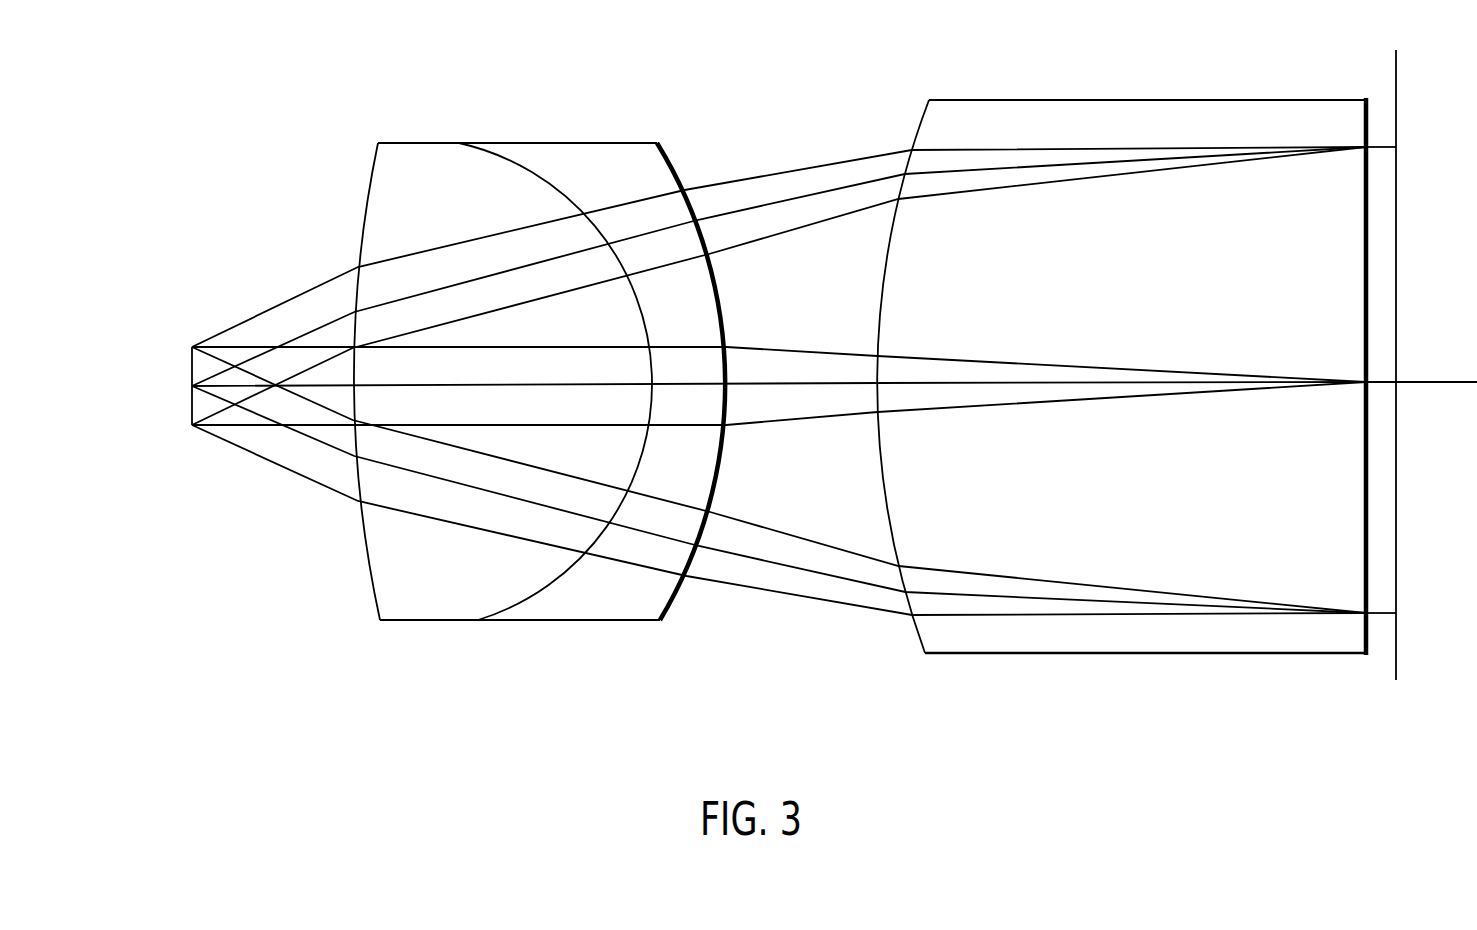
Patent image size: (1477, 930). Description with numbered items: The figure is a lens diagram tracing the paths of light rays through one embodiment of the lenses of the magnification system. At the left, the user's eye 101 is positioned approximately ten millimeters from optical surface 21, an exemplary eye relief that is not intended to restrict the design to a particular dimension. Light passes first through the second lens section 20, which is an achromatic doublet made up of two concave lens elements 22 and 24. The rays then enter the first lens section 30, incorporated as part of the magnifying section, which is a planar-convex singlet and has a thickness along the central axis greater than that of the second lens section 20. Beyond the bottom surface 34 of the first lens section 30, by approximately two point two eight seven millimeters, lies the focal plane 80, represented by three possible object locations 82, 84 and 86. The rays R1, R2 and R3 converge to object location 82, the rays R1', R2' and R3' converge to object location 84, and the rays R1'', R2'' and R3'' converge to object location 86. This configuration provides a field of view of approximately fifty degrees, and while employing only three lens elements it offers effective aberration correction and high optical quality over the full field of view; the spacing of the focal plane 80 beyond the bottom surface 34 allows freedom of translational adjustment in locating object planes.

The user's eye 101 is at (171, 386).
The second lens section 20 is at (452, 203).
The optical surface 21 is at (371, 181).
The concave lens element 22 is at (673, 156).
The concave lens element 24 is at (541, 176).
The first lens section / magnifying section 30 is at (1146, 482).
The bottom surface 34 is at (1364, 213).
The focal plane 80 is at (1418, 356).
The object location 82 is at (1421, 362).
The object location 84 is at (1403, 149).
The object location 86 is at (1407, 619).
The light ray R1 is at (779, 350).
The light ray R2 is at (779, 347).
The light ray R3 is at (779, 418).
The light ray R1' is at (779, 238).
The light ray R2' is at (779, 266).
The light ray R3' is at (779, 286).
The light ray R1'' is at (779, 480).
The light ray R2'' is at (779, 499).
The light ray R3'' is at (779, 532).